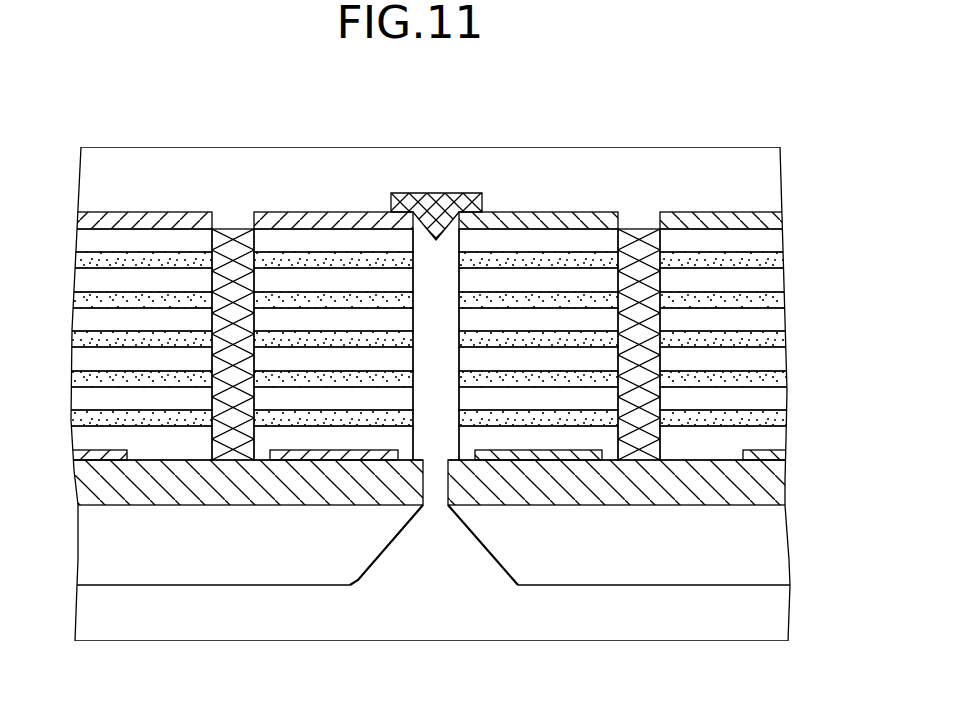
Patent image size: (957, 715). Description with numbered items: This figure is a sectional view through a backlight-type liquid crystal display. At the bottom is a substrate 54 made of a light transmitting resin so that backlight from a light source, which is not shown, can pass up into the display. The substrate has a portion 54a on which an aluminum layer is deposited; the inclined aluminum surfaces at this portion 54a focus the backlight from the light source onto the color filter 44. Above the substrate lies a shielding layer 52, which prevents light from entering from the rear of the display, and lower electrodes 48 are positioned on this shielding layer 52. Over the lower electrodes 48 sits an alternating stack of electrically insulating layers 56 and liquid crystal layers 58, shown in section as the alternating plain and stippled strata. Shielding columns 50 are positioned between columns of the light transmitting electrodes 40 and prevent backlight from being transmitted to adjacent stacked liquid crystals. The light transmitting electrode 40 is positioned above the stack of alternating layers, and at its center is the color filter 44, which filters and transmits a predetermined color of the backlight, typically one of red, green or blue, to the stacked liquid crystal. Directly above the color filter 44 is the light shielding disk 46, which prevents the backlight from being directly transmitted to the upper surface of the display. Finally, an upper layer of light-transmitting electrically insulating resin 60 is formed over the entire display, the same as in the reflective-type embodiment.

The light transmitting electrode 40 is at (391, 222).
The color filter 44 is at (445, 260).
The light shielding disk 46 is at (478, 195).
The lower electrode 48 is at (300, 457).
The shielding column 50 is at (658, 242).
The shielding layer 52 is at (652, 490).
The substrate 54 is at (440, 610).
The portion with aluminum layer 54a is at (385, 537).
The electrically insulating layer 56 is at (261, 278).
The liquid crystal layer 58 is at (317, 300).
The light-transmitting electrically insulating resin 60 is at (553, 172).